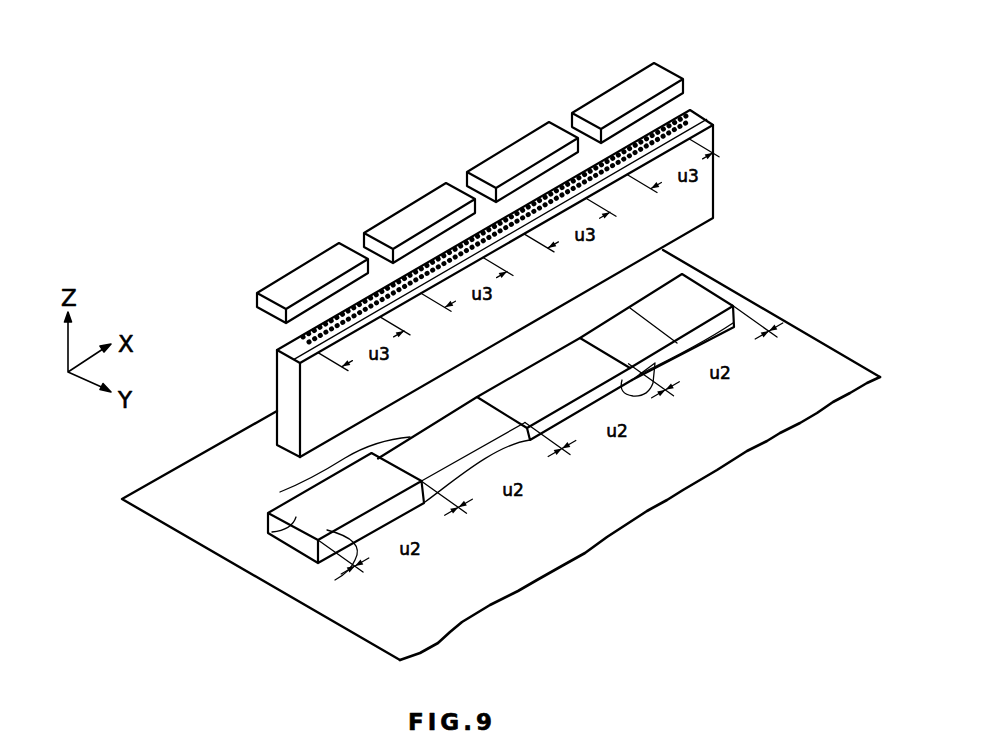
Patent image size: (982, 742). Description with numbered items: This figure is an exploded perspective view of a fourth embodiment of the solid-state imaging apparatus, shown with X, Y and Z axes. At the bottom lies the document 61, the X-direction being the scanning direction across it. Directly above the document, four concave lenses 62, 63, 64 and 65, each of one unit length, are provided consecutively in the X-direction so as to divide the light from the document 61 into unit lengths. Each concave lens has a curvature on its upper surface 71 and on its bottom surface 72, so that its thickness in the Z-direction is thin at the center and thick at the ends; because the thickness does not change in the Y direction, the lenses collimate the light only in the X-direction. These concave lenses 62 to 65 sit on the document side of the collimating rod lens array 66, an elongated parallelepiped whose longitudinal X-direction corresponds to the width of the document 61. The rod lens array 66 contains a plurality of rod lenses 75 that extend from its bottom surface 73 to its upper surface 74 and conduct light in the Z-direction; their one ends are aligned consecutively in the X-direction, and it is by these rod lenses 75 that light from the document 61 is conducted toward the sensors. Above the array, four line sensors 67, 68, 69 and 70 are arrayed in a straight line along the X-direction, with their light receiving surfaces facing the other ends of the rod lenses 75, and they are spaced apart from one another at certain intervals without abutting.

The document 61 is at (798, 348).
The concave lens 62 is at (267, 530).
The concave lens 63 is at (443, 443).
The concave lens 64 is at (533, 385).
The concave lens 65 is at (700, 300).
The collimating rod lens array 66 is at (500, 257).
The line sensor 67 is at (305, 272).
The line sensor 68 is at (400, 213).
The line sensor 69 is at (505, 150).
The line sensor 70 is at (608, 98).
The upper surface 71 is at (313, 500).
The bottom surface 72 is at (360, 540).
The bottom surface 73 is at (715, 220).
The upper surface 74 is at (700, 108).
The rod lenses 75 is at (293, 342).